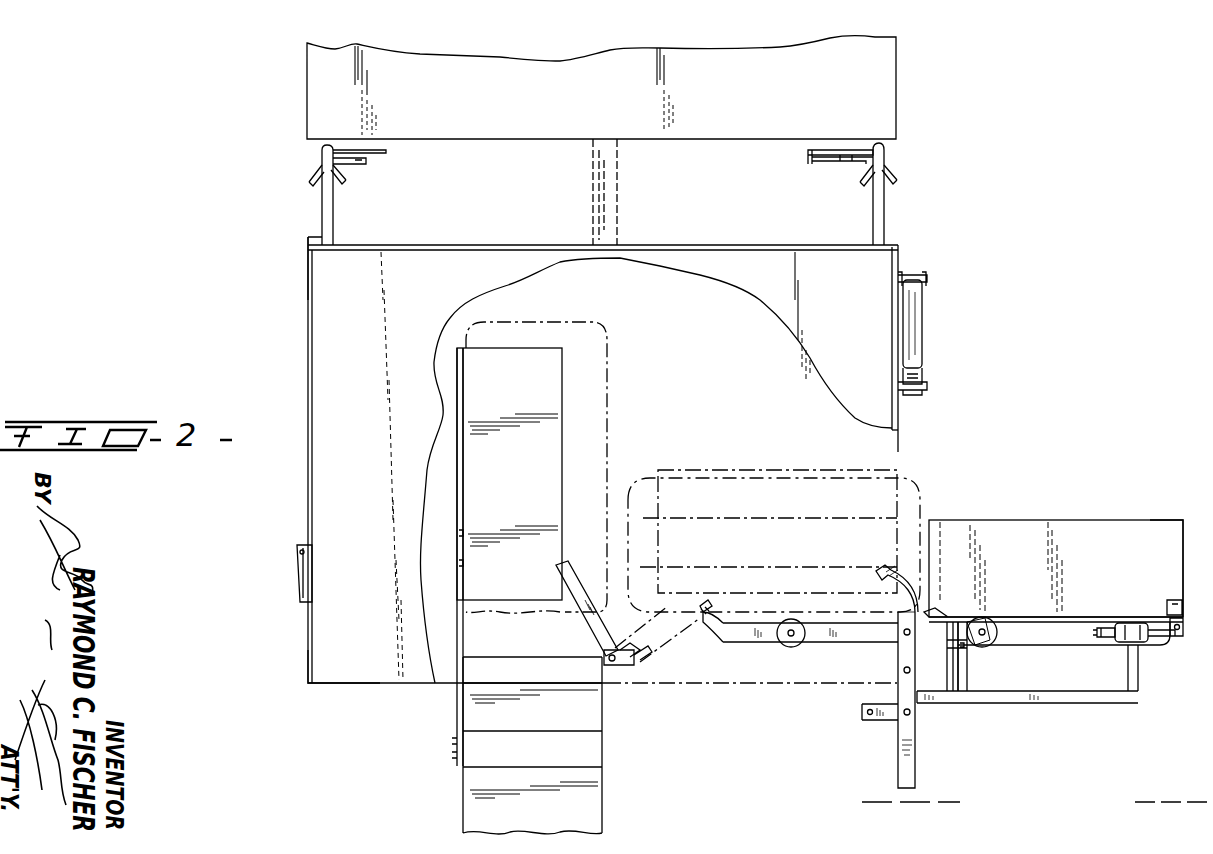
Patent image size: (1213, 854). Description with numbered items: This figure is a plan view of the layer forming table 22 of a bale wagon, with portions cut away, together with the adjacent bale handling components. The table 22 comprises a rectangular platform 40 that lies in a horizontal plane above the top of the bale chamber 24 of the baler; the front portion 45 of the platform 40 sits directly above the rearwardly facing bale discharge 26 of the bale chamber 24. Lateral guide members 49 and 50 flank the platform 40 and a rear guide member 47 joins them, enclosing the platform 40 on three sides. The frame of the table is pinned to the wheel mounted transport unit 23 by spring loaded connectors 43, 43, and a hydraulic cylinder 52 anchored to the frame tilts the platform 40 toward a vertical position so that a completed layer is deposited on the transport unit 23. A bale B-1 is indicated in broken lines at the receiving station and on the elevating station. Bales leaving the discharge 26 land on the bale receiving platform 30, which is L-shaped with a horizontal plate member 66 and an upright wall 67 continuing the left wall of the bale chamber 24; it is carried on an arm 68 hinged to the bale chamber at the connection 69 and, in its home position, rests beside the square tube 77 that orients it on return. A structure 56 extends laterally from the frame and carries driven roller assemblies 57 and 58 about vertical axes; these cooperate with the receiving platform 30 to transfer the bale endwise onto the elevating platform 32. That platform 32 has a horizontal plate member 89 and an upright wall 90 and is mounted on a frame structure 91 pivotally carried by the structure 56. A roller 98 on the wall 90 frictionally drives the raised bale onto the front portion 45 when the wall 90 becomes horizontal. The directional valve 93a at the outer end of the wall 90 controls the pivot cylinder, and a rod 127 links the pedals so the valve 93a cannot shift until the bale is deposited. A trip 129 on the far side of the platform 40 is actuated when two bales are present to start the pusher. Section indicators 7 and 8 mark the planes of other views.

The transport unit 23 is at (604, 112).
The spring loaded connectors 43 is at (392, 160).
The rear guide member 47 is at (430, 247).
The lateral guide member 49 is at (308, 272).
The rectangular platform 40 is at (342, 352).
The front portion of the platform 45 is at (370, 663).
The layer forming table 22 is at (912, 268).
The lateral guide member 50 is at (900, 418).
The hydraulic cylinder 52 is at (918, 330).
The bale receiving platform 30 is at (597, 415).
The bale B-1 is at (557, 323).
The horizontal plate member 66 is at (562, 484).
The upright wall 67 is at (465, 392).
The square tube 77 is at (463, 512).
The bale chamber 24 is at (522, 722).
The bale discharge 26 is at (522, 657).
The arm 68 is at (580, 600).
The hinged connection 69 is at (638, 652).
The structure 56 is at (843, 643).
The roller assembly 57 is at (795, 625).
The elevating platform 32 is at (1052, 518).
The horizontal plate member 89 is at (1120, 532).
The upright wall 90 is at (1068, 617).
The roller 98 is at (992, 624).
The directional valve 93a is at (1132, 627).
The rod 127 is at (1030, 650).
The frame structure 91 is at (1138, 660).
The roller assembly 58 is at (957, 652).
The trip 129 is at (308, 578).
The section line 7 is at (1212, 490).
The section line 8 is at (862, 812).